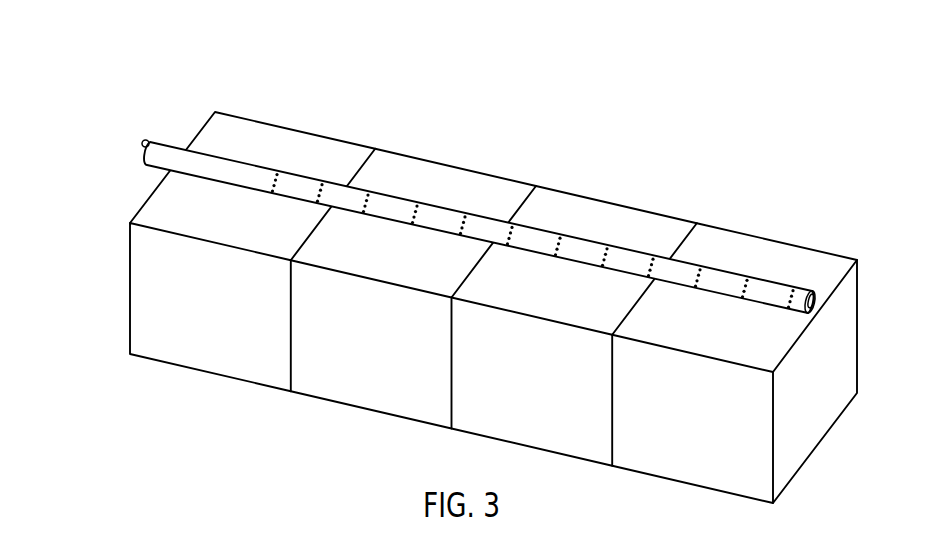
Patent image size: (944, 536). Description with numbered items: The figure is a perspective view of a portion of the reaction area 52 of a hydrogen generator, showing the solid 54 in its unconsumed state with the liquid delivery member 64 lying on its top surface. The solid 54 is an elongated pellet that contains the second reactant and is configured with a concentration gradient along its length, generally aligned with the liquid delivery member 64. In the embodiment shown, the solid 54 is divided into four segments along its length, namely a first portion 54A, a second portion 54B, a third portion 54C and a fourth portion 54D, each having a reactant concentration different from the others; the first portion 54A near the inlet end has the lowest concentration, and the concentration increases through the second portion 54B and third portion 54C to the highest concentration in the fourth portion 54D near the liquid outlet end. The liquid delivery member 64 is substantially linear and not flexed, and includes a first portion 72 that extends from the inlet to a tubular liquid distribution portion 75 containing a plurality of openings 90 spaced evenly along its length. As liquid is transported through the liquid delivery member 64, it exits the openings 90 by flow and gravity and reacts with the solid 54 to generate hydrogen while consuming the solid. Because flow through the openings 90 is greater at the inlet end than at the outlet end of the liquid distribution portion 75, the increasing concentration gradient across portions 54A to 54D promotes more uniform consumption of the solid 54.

The reaction area 52 is at (250, 100).
The solid 54 is at (493, 293).
The first portion 54A is at (271, 137).
The second portion 54B is at (432, 173).
The third portion 54C is at (595, 208).
The fourth portion 54D is at (753, 248).
The liquid delivery member 64 is at (146, 165).
The first portion 72 is at (161, 142).
The liquid distribution portion 75 is at (393, 210).
The openings 90 is at (465, 215).